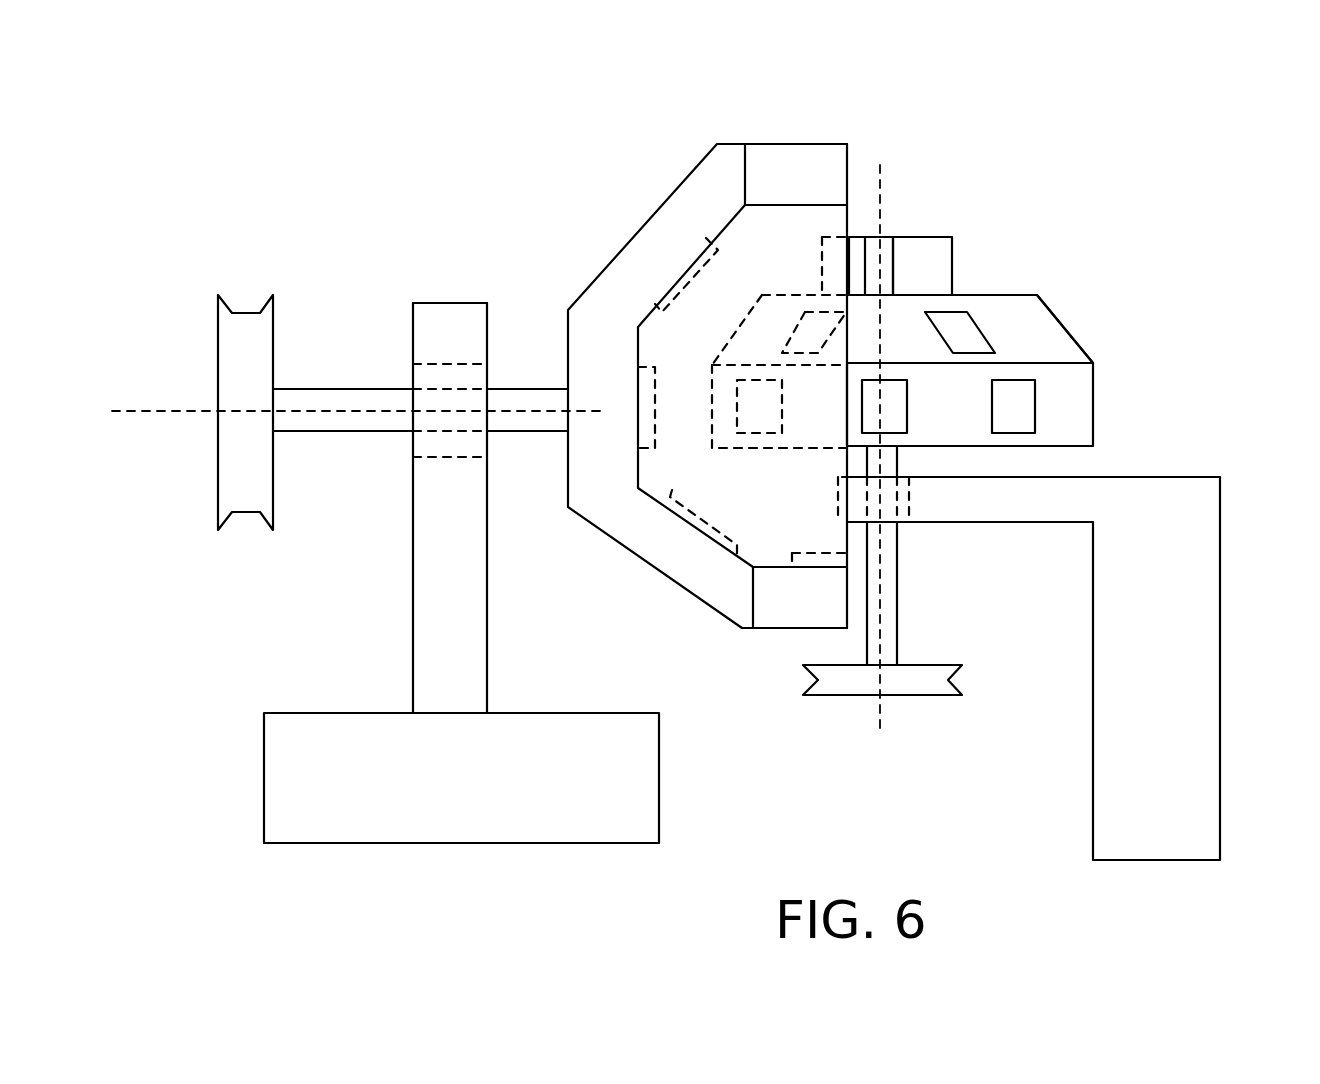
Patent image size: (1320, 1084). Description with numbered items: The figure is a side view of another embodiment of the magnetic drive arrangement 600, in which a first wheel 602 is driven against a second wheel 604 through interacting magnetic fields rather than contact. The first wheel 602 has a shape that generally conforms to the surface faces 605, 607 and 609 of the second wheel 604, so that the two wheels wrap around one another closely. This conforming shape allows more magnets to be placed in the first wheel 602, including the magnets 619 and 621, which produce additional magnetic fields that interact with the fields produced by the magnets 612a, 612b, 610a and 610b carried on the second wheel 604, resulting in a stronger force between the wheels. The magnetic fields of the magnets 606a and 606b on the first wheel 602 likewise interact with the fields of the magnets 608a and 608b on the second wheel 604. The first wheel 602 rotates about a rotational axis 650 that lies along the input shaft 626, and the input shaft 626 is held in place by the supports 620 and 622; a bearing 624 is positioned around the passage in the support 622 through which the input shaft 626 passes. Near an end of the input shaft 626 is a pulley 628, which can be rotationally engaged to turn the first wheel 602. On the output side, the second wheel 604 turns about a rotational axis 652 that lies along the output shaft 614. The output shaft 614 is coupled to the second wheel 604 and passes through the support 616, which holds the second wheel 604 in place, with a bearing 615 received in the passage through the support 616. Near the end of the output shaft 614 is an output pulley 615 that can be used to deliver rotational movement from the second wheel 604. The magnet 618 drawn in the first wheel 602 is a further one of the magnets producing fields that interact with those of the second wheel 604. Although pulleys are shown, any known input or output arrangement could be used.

The laser cutting system 600 is at (1077, 125).
The first wheel 602 is at (796, 155).
The second wheel 604 is at (1073, 337).
The surface face 605 is at (1095, 412).
The magnet 606a is at (833, 212).
The magnet 606b is at (807, 562).
The surface face 607 is at (1027, 327).
The magnet 608a is at (933, 277).
The magnet 608b is at (884, 243).
The surface face 609 is at (1012, 296).
The magnet 610a is at (793, 337).
The magnet 610b is at (942, 317).
The magnet 612a is at (1030, 420).
The magnet 612b is at (900, 420).
The output shaft 614 is at (888, 558).
The bearing / output pulley 615 is at (898, 485).
The support 616 is at (1212, 568).
The bearing 618 is at (655, 410).
The magnet 619 is at (705, 277).
The support 620 is at (660, 805).
The magnet 621 is at (718, 525).
The support 622 is at (488, 663).
The bearing 624 is at (473, 373).
The input shaft 626 is at (317, 412).
The pulley 628 is at (262, 343).
The rotational axis 650 is at (168, 412).
The rotational axis 652 is at (883, 705).